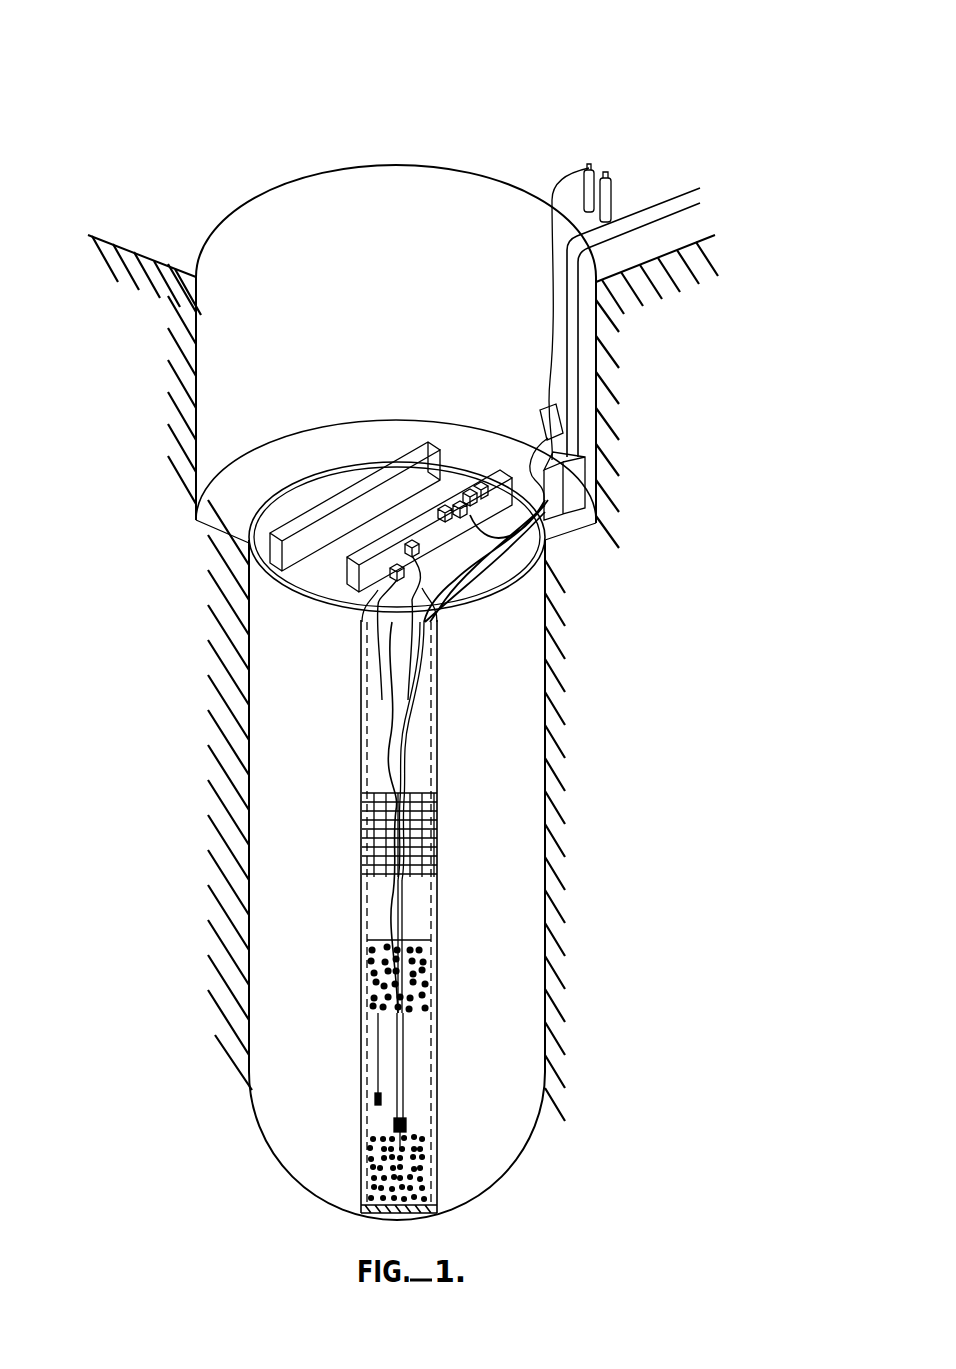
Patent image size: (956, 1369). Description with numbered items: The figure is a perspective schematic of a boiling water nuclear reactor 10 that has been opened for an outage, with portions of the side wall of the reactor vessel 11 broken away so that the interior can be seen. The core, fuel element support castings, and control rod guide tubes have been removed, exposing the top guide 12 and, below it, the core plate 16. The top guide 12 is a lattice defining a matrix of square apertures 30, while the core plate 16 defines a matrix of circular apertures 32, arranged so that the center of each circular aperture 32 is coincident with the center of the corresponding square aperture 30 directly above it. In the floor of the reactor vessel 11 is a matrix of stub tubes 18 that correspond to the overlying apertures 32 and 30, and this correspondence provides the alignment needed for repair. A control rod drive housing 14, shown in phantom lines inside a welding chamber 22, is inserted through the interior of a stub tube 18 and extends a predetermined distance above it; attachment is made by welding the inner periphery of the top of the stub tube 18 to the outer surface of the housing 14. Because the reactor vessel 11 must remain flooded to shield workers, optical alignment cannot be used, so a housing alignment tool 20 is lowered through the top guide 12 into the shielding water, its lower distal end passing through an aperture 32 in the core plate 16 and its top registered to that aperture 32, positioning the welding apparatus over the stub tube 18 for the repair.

The boiling water nuclear reactor 10 is at (638, 48).
The reactor vessel 11 is at (617, 690).
The top guide 12 is at (412, 787).
The control rod drive housing 14 is at (436, 1124).
The core plate 16 is at (425, 932).
The stub tube 18 is at (437, 1173).
The housing alignment tool 20 is at (405, 1037).
The welding chamber 22 is at (392, 1123).
The square aperture 30 is at (434, 826).
The circular aperture 32 is at (430, 975).